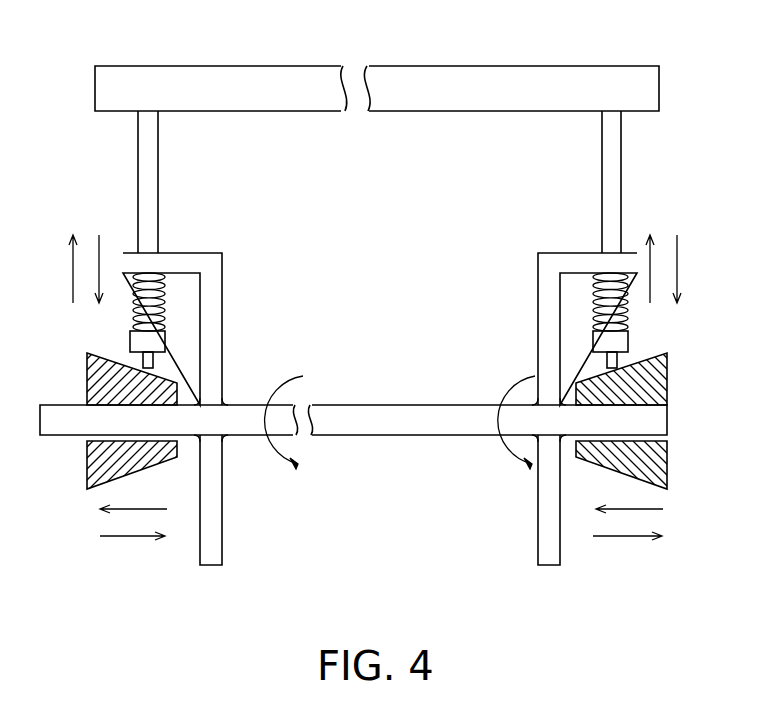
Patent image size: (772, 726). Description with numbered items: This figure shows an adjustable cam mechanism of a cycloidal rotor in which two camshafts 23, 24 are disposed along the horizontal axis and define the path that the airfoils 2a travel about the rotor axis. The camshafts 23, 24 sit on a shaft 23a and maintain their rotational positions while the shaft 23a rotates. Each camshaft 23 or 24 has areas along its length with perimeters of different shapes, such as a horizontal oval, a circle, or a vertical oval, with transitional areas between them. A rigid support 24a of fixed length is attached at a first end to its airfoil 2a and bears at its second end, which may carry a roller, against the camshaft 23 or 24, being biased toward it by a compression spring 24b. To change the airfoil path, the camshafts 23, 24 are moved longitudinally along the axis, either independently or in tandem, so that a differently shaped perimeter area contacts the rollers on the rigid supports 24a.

The airfoil 2a is at (510, 87).
The camshaft 23 is at (95, 460).
The shaft 23a is at (425, 418).
The camshaft 24 is at (655, 460).
The rigid support 24a is at (147, 152).
The compression spring 24b is at (132, 300).